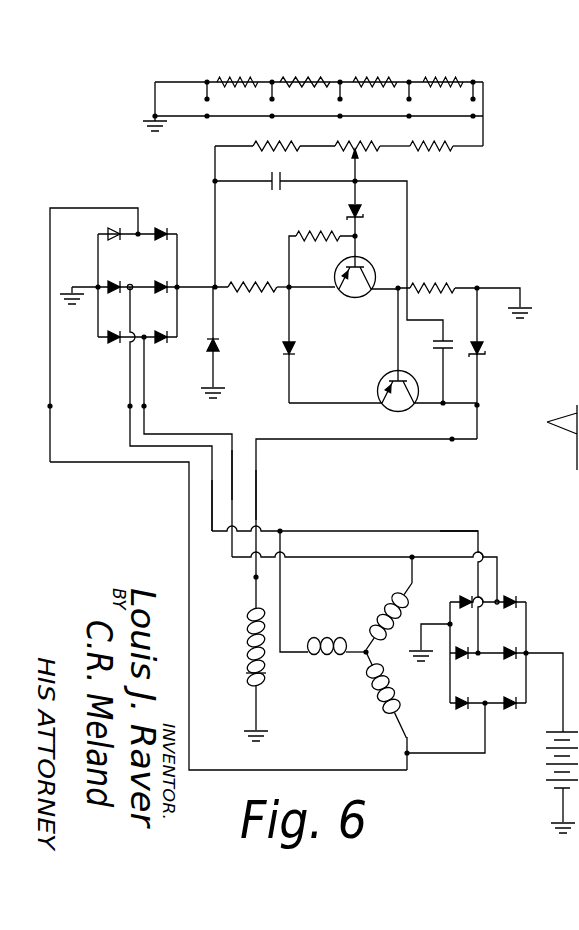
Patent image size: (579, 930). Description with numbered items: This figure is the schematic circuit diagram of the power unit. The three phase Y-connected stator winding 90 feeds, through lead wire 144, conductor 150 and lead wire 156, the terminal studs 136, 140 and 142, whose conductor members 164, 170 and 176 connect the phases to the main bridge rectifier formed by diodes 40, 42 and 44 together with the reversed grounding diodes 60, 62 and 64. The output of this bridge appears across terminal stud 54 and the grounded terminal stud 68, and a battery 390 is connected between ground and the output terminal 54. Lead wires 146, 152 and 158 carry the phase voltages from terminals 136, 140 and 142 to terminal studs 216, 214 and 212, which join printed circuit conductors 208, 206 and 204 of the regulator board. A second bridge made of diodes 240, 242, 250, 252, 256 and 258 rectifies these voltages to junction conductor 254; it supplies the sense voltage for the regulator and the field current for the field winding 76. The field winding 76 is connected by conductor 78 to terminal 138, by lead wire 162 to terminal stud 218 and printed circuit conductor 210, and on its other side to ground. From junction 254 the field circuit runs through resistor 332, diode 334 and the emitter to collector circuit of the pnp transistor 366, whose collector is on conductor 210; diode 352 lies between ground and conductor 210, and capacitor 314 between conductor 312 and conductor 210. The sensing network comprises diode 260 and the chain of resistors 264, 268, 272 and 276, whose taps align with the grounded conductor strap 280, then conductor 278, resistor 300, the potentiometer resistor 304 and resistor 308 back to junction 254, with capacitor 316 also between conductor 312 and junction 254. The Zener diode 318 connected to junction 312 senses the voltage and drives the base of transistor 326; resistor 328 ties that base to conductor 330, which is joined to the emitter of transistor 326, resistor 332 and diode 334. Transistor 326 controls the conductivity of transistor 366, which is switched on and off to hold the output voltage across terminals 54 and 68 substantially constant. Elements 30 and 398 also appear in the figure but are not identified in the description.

The generator lead 30 is at (549, 437).
The diode 40 is at (505, 710).
The diode 42 is at (508, 648).
The diode 44 is at (513, 593).
The terminal stud 54 is at (527, 652).
The diode 60 is at (462, 709).
The diode 62 is at (461, 659).
The diode 64 is at (466, 596).
The terminal stud 68 is at (448, 623).
The field winding 76 is at (244, 673).
The conductor 78 is at (250, 600).
The stator winding 90 is at (362, 693).
The terminal stud 136 is at (408, 755).
The terminal 138 is at (254, 578).
The terminal stud 140 is at (282, 531).
The terminal stud 142 is at (411, 557).
The lead wire 144 is at (405, 737).
The lead wire 146 is at (122, 463).
The conductor 150 is at (282, 585).
The lead wire 152 is at (209, 478).
The lead wire 156 is at (411, 570).
The lead wire 158 is at (234, 470).
The lead wire 162 is at (258, 490).
The conductor member 164 is at (448, 754).
The conductor member 170 is at (458, 531).
The conductor member 176 is at (453, 557).
The printed circuit conductor 204 is at (146, 380).
The printed circuit conductor 206 is at (128, 377).
The printed circuit conductor 208 is at (78, 207).
The printed circuit conductor 210 is at (474, 418).
The terminal stud 212 is at (145, 408).
The terminal stud 214 is at (129, 407).
The terminal stud 216 is at (51, 406).
The terminal stud 218 is at (452, 439).
The diode 240 is at (112, 342).
The diode 242 is at (112, 282).
The diode 250 is at (112, 231).
The diode 252 is at (161, 230).
The printed circuit conductor 254 is at (268, 291).
The diode 256 is at (163, 282).
The diode 258 is at (156, 343).
The diode 260 is at (222, 354).
The resistor 264 is at (237, 77).
The resistor 268 is at (310, 77).
The resistor 272 is at (387, 79).
The resistor 276 is at (463, 80).
The printed circuit conductor 278 is at (487, 125).
The strap connector 280 is at (185, 117).
The resistor 300 is at (440, 150).
The potentiometer resistor 304 is at (348, 150).
The resistor 308 is at (267, 148).
The printed circuit conductor 312 is at (353, 183).
The capacitor 314 is at (449, 352).
The capacitor 316 is at (268, 184).
The Zener diode 318 is at (365, 213).
The transistor 326 is at (362, 298).
The resistor 328 is at (325, 242).
The printed circuit conductor 330 is at (291, 290).
The resistor 332 is at (238, 285).
The diode 334 is at (295, 346).
The diode 352 is at (486, 346).
The transistor 366 is at (393, 415).
The battery 390 is at (547, 790).
The resistor 398 is at (433, 284).